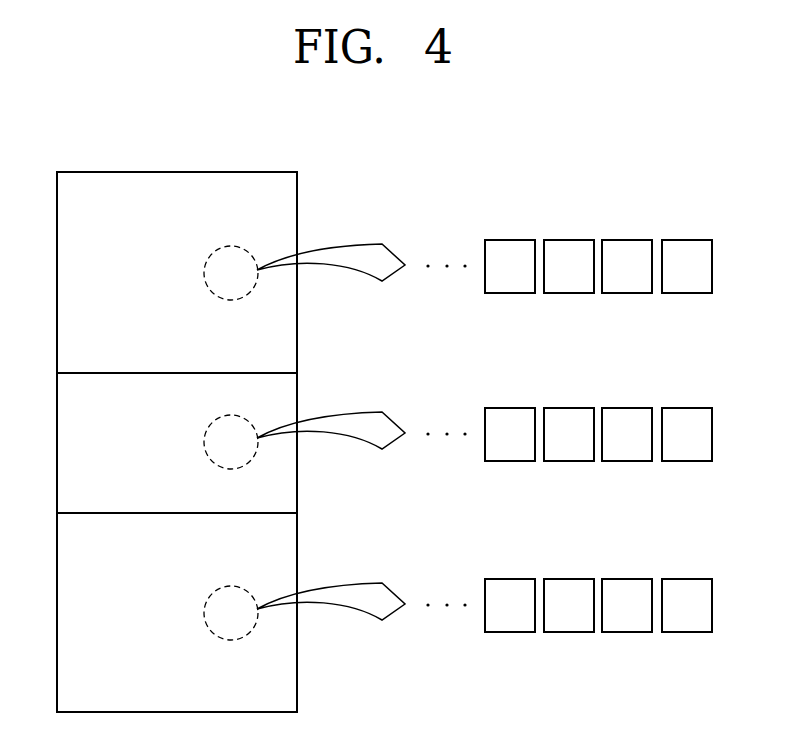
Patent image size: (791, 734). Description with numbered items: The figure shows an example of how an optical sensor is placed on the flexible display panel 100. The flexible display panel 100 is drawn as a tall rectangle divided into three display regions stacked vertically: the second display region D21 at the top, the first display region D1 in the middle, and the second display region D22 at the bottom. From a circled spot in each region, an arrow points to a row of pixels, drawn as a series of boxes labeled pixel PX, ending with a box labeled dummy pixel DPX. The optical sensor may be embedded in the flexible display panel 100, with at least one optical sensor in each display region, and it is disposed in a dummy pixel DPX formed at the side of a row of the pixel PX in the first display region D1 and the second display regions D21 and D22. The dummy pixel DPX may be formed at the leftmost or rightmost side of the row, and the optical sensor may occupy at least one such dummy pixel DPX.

The flexible display panel 100 is at (146, 172).
The second display region D21 is at (267, 272).
The first display region D1 is at (267, 440).
The second display region D22 is at (267, 611).
The pixel PX is at (568, 436).
The dummy pixel DPX is at (687, 436).